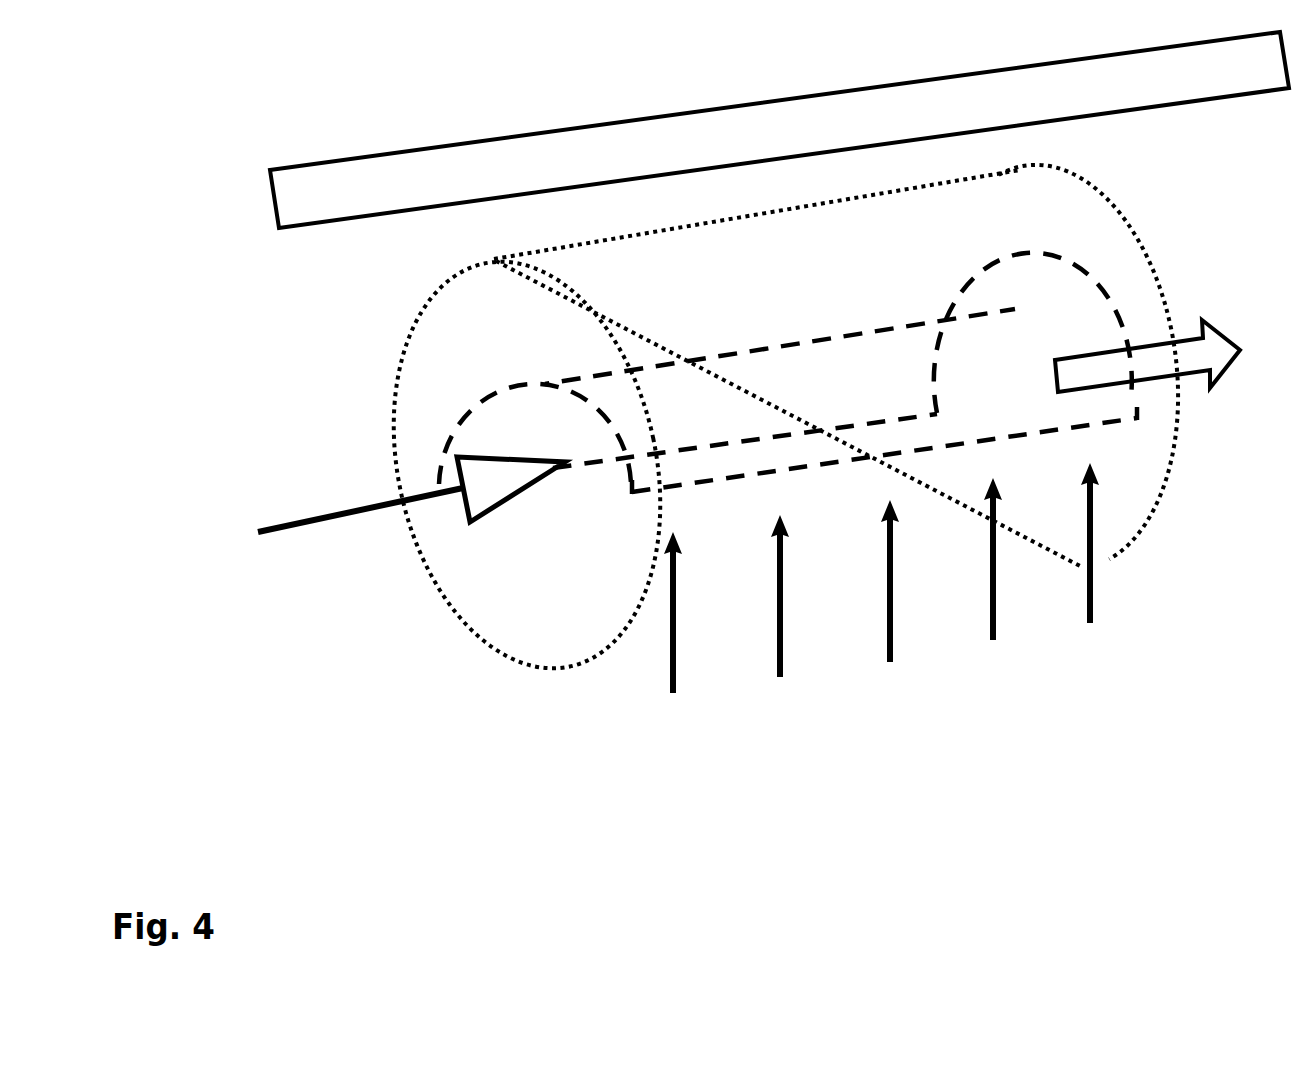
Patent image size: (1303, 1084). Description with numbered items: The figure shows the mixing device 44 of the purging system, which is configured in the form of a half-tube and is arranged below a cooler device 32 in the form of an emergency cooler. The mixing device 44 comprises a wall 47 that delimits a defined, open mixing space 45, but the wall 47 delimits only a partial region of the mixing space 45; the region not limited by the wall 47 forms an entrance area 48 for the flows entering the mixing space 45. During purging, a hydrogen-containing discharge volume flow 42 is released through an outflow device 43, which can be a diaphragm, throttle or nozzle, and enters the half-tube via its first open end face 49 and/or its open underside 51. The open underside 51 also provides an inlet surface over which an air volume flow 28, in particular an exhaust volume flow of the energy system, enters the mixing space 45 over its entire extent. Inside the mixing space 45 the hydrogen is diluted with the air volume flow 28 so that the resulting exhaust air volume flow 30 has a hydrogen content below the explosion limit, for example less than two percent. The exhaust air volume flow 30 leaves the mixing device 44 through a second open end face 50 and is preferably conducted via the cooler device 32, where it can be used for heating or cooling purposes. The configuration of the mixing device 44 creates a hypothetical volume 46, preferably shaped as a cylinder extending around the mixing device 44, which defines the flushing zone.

The air volume flow 28 is at (668, 668).
The exhaust air volume flow 30 is at (1177, 350).
The cooler device 32 is at (368, 180).
The discharge volume flow 42 is at (343, 520).
The outflow device 43 is at (497, 480).
The mixing device 44 is at (893, 307).
The mixing space 45 is at (884, 436).
The hypothetical volume 46 is at (440, 362).
The wall 47 is at (793, 392).
The entrance area 48 is at (520, 402).
The first open end face 49 is at (553, 433).
The second open end face 50 is at (1053, 333).
The open underside 51 is at (568, 498).